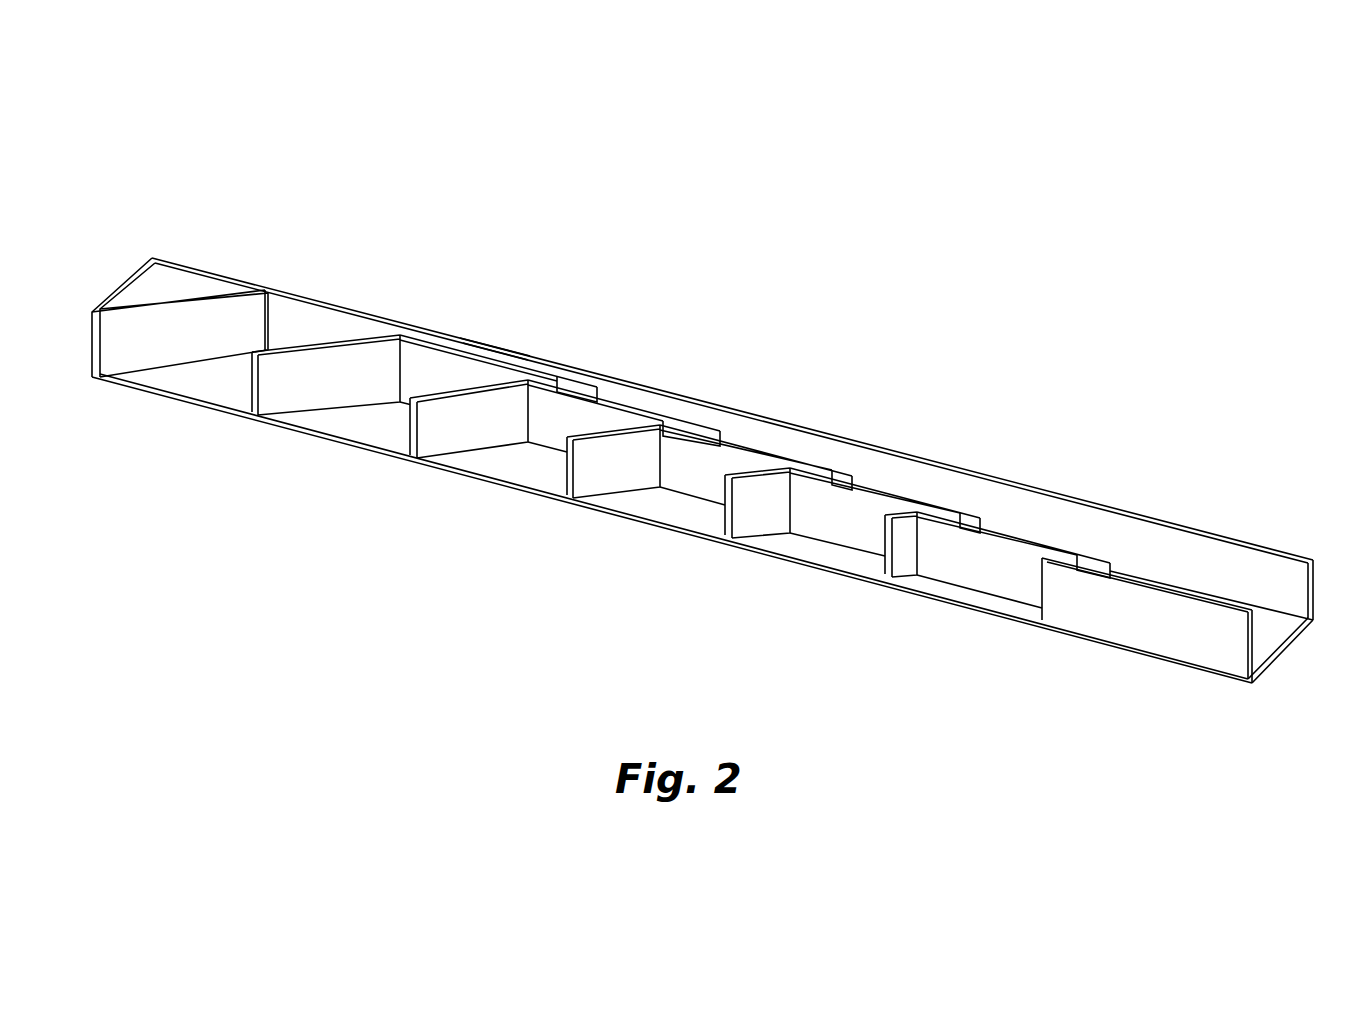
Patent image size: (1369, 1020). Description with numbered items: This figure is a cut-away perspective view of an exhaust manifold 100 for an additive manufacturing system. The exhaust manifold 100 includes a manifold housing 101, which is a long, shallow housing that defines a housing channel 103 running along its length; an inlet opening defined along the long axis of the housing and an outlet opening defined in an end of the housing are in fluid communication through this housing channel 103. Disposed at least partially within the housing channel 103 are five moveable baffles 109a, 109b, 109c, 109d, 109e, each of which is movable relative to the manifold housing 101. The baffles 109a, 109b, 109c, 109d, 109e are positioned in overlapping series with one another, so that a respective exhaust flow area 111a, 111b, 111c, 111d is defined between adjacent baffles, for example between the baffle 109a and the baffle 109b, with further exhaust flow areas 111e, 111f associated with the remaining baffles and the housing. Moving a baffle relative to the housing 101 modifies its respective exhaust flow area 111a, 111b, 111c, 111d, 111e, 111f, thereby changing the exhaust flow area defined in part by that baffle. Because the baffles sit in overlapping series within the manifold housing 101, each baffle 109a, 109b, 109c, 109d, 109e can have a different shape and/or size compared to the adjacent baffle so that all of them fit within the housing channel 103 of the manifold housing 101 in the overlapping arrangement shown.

The exhaust manifold 100 is at (1042, 140).
The manifold housing 101 is at (330, 322).
The housing channel 103 is at (1163, 547).
The moveable baffle 109a is at (314, 392).
The moveable baffle 109b is at (474, 425).
The moveable baffle 109c is at (622, 475).
The moveable baffle 109d is at (770, 513).
The moveable baffle 109e is at (908, 556).
The exhaust flow area 111a is at (563, 385).
The exhaust flow area 111b is at (696, 425).
The exhaust flow area 111c is at (833, 470).
The exhaust flow area 111d is at (964, 512).
The exhaust flow area 111e is at (1077, 557).
The exhaust flow area 111f is at (495, 352).